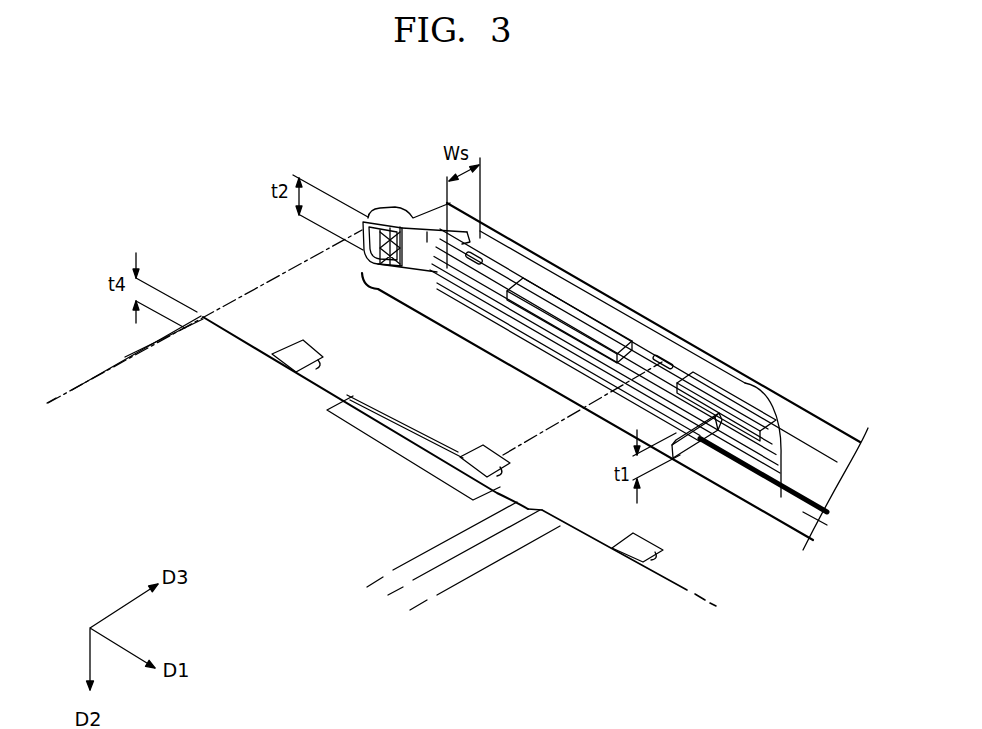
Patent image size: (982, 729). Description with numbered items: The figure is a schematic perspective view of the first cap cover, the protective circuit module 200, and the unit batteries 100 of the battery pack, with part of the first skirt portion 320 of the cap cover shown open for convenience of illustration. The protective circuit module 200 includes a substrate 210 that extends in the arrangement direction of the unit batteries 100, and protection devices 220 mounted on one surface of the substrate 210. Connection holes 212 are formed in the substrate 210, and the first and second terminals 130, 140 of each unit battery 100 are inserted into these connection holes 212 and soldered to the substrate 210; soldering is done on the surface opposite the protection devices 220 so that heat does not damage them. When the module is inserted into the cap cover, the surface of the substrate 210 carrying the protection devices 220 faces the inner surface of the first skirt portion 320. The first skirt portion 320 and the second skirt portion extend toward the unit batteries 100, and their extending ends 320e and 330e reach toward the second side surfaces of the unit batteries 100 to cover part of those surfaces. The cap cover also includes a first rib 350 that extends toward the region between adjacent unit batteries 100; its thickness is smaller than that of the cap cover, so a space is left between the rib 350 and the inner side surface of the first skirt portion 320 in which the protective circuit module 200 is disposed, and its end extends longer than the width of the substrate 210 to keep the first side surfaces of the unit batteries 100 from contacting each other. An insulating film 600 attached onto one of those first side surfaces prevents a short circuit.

The unit battery 100 is at (135, 377).
The first terminal 130 is at (485, 451).
The second terminal 140 is at (296, 350).
The protective circuit module 200 is at (545, 266).
The substrate 210 is at (646, 352).
The connection hole 212 is at (483, 254).
The protection device 220 is at (587, 327).
The first skirt portion 320 is at (793, 420).
The extending end of the first skirt portion 320e is at (802, 486).
The extending end of the second skirt portion 330e is at (471, 341).
The first rib 350 is at (686, 442).
The insulating film 600 is at (546, 513).